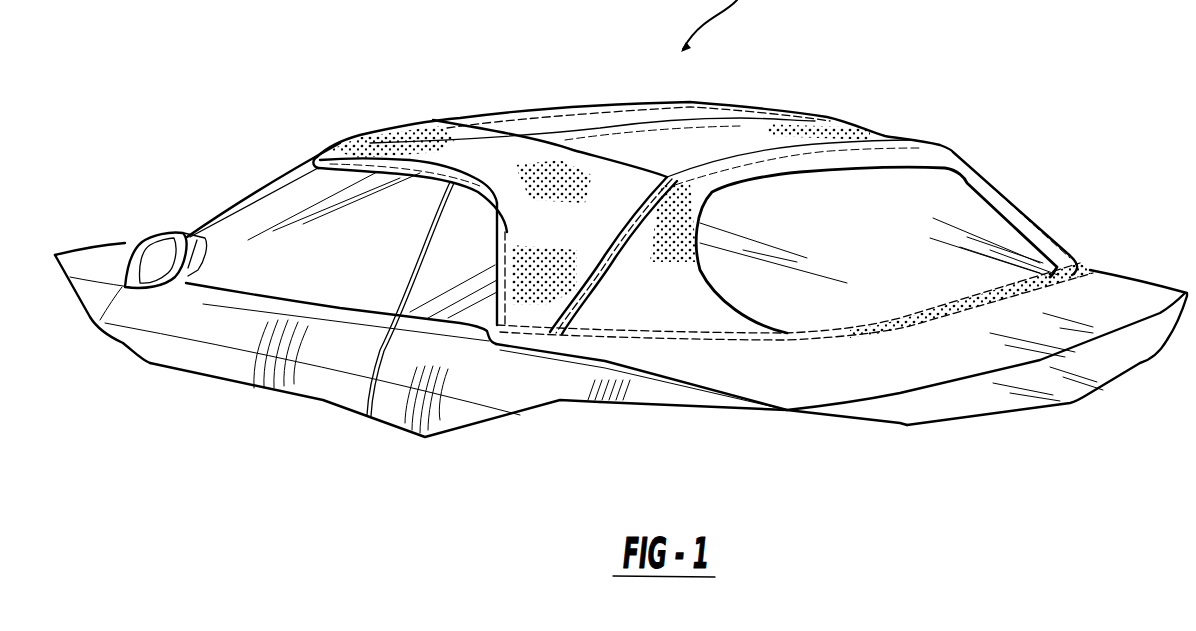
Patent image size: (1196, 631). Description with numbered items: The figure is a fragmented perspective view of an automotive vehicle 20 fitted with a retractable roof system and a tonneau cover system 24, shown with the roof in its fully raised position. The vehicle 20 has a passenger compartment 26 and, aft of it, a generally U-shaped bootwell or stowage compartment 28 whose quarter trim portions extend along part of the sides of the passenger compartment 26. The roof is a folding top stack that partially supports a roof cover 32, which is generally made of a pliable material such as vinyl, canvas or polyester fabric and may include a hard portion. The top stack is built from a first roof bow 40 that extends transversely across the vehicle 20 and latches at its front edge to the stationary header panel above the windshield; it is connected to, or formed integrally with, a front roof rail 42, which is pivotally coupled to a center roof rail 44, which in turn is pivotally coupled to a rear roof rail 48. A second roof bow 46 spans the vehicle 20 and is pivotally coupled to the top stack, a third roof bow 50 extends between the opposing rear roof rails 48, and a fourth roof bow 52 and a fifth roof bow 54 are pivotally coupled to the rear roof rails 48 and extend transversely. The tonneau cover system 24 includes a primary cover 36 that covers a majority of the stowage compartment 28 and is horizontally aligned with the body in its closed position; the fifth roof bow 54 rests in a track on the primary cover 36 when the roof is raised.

The automotive vehicle 20 is at (178, 353).
The tonneau cover system 24 is at (1150, 243).
The passenger compartment 26 is at (358, 290).
The stowage compartment 28 is at (596, 458).
The roof cover 32 is at (708, 109).
The primary cover 36 is at (800, 370).
The first roof bow 40 is at (370, 132).
The front roof rail 42 is at (400, 160).
The center roof rail 44 is at (472, 182).
The second roof bow 46 is at (447, 128).
The rear roof rail 48 is at (507, 226).
The third roof bow 50 is at (592, 118).
The fourth roof bow 52 is at (883, 148).
The fifth roof bow 54 is at (1081, 272).